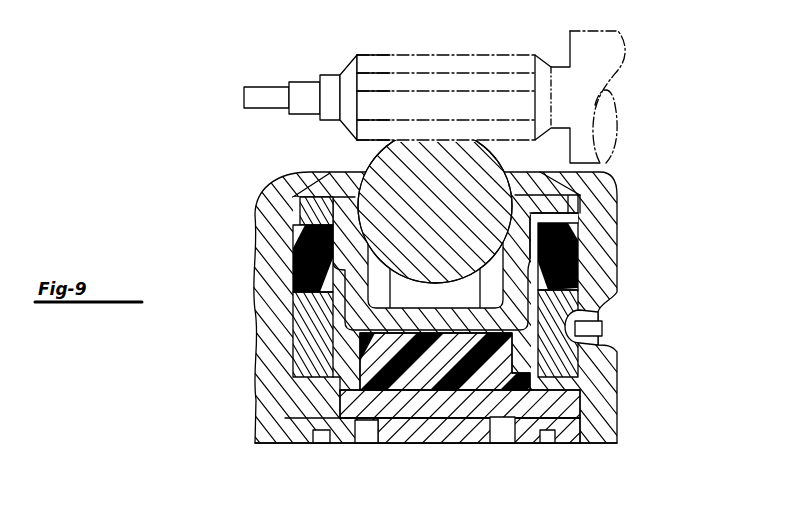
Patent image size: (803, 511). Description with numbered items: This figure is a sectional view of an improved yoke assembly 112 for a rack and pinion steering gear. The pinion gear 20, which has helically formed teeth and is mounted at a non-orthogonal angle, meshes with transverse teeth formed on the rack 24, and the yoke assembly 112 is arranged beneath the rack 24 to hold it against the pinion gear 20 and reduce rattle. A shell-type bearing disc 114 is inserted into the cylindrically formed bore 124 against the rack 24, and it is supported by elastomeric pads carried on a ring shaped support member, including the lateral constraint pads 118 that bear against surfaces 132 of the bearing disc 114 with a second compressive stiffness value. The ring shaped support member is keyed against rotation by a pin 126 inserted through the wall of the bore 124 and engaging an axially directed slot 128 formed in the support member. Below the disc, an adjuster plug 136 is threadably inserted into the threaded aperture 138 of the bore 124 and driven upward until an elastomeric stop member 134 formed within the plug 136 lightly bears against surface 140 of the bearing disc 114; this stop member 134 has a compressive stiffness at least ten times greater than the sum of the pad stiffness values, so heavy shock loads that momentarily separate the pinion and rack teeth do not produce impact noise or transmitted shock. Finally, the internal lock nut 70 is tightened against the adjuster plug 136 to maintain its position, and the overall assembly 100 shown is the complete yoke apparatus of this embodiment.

The ball joint assembly 100 is at (401, 255).
The pinion gear 20 is at (447, 62).
The rack 24 is at (370, 178).
The internal lock nut 70 is at (563, 445).
The improved yoke assembly 112 is at (662, 137).
The shell-type bearing disc 114 is at (578, 200).
The lateral constraint pads 118 is at (293, 252).
The cylindrically formed bore 124 is at (293, 343).
The pin 126 is at (602, 328).
The axially directed slot 128 is at (603, 345).
The surfaces 132 is at (293, 218).
The elastomeric stop member 134 is at (553, 389).
The adjuster plug 136 is at (432, 446).
The threaded aperture 138 is at (290, 412).
The surface 140 is at (306, 422).